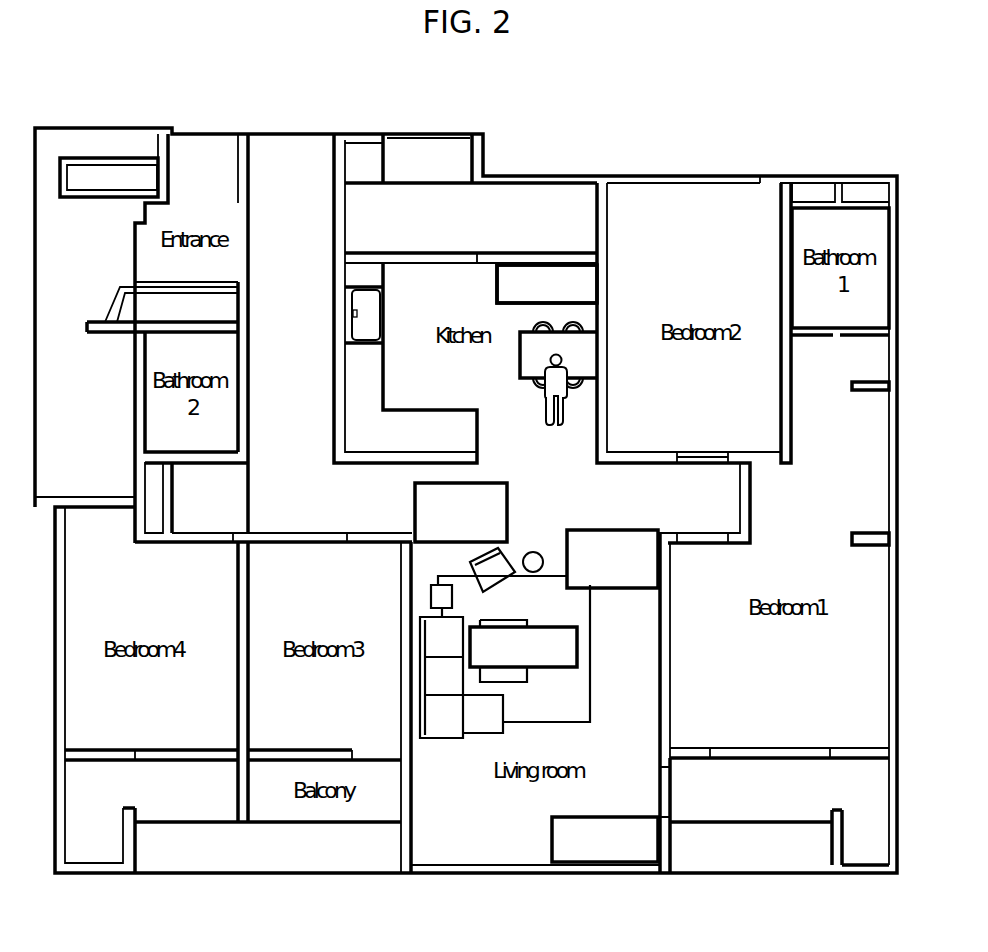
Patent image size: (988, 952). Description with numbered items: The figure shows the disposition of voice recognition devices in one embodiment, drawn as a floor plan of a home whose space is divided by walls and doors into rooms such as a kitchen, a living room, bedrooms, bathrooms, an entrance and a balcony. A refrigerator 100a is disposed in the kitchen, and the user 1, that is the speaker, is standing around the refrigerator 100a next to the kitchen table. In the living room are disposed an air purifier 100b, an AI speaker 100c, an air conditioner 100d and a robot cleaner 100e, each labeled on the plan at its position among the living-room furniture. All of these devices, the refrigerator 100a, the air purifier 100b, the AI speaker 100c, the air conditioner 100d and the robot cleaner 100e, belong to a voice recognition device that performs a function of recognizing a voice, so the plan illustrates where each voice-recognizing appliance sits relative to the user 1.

The refrigerator 100a is at (497, 284).
The user 1 is at (562, 364).
The robot cleaner 100e is at (415, 517).
The air purifier 100b is at (658, 558).
The AI speaker 100c is at (487, 667).
The air conditioner 100d is at (604, 862).